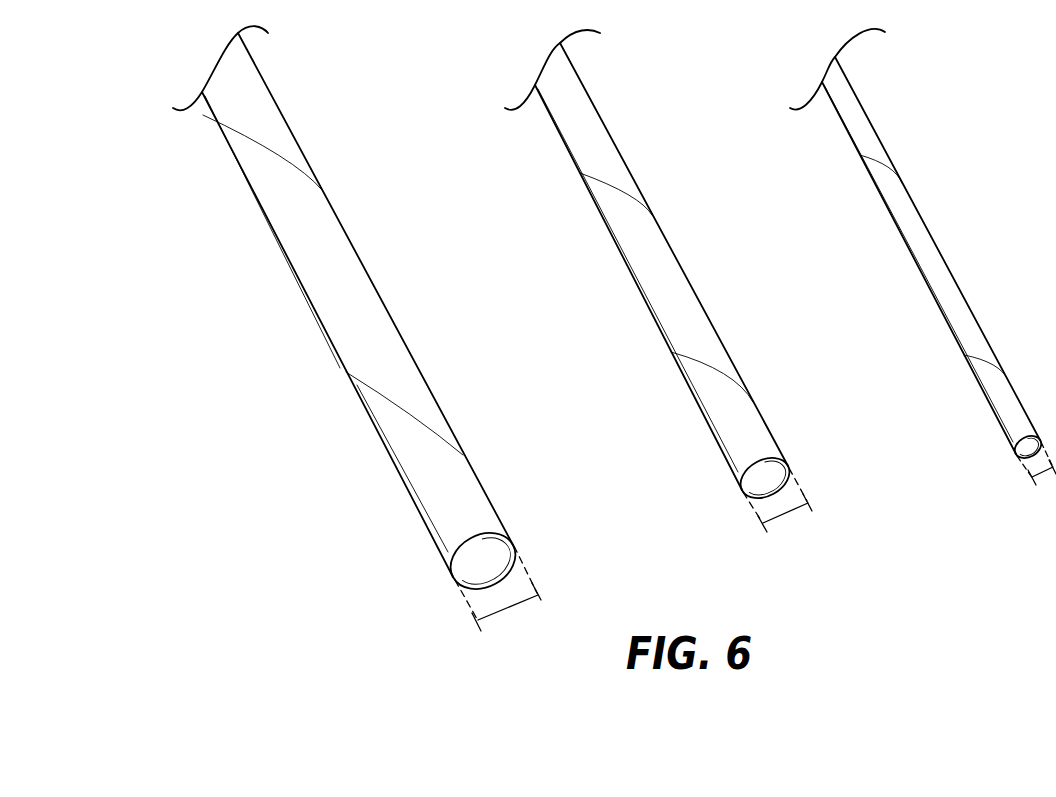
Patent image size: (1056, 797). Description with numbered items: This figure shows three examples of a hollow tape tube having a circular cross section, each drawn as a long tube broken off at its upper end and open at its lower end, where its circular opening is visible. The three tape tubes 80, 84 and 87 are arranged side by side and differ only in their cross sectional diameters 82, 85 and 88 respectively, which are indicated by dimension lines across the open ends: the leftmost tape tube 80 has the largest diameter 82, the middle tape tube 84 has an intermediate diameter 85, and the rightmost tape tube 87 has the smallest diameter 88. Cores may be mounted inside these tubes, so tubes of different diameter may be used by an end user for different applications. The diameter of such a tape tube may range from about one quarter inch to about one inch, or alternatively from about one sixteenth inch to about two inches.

The tape tube 80 is at (383, 302).
The cross sectional diameter 82 is at (503, 607).
The tape tube 84 is at (675, 258).
The cross sectional diameter 85 is at (785, 512).
The tape tube 87 is at (928, 230).
The cross sectional diameter 88 is at (1045, 472).